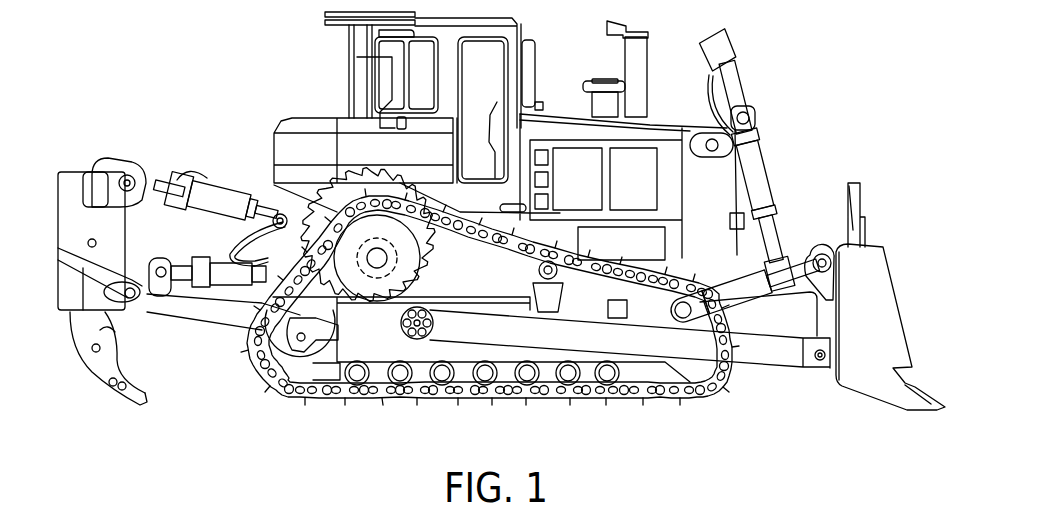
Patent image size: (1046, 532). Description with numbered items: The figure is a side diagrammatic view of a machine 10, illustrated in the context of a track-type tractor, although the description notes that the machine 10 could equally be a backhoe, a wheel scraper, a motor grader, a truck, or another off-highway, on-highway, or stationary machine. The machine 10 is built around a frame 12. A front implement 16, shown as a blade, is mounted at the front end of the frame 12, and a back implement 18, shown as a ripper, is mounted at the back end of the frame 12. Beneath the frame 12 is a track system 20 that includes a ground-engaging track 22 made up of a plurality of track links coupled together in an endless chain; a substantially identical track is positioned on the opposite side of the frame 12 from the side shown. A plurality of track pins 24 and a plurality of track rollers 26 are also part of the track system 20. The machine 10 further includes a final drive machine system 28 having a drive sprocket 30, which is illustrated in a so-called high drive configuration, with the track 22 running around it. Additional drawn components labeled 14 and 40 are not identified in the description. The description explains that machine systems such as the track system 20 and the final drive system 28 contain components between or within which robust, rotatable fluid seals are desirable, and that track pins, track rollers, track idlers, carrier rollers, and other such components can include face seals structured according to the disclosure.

The machine 10 is at (816, 80).
The frame 12 is at (685, 190).
The operator cab 14 is at (513, 27).
The front implement 16 is at (897, 247).
The back implement 18 is at (163, 171).
The track system 20 is at (451, 420).
The ground-engaging track 22 is at (615, 408).
The track pins 24 is at (540, 398).
The track rollers 26 is at (366, 399).
The final drive machine system 28 is at (444, 252).
The drive sprocket 30 is at (425, 285).
The idler 40 is at (383, 282).